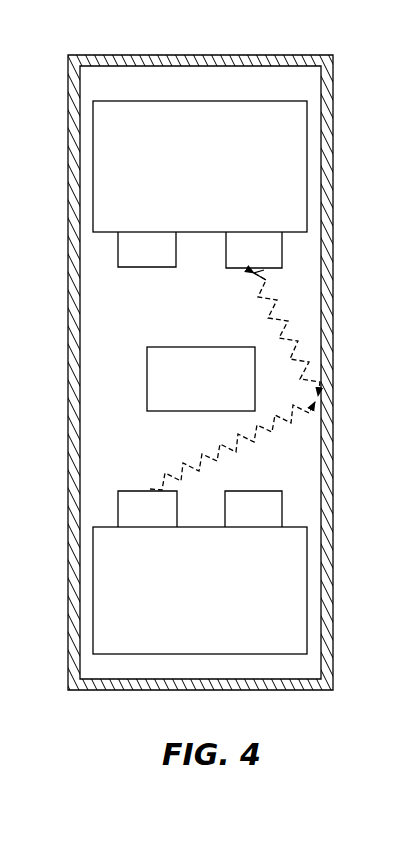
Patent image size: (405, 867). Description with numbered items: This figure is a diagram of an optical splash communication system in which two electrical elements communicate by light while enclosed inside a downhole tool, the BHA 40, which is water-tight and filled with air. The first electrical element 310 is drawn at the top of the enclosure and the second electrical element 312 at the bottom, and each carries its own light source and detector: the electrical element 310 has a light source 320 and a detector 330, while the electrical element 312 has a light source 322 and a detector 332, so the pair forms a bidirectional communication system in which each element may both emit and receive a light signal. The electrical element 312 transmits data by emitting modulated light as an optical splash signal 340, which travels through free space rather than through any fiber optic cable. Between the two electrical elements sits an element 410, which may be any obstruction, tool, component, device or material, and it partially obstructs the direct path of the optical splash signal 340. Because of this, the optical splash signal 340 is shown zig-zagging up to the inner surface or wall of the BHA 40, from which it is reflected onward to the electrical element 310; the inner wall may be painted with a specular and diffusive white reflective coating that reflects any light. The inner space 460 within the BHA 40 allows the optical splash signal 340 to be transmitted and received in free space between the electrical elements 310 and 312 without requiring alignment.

The BHA 40 is at (132, 55).
The electrical element 310 is at (222, 178).
The electrical element 312 is at (222, 603).
The light source 320 is at (127, 262).
The detector 330 is at (234, 262).
The light source 322 is at (127, 521).
The detector 332 is at (234, 521).
The optical splash signal 340 is at (192, 462).
The element 410 is at (222, 392).
The inner space 460 is at (296, 279).